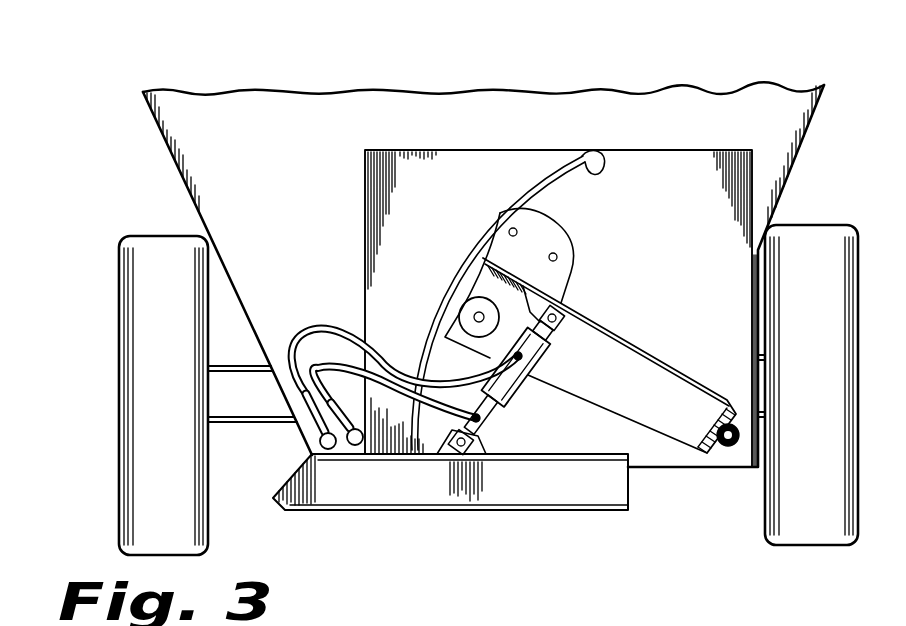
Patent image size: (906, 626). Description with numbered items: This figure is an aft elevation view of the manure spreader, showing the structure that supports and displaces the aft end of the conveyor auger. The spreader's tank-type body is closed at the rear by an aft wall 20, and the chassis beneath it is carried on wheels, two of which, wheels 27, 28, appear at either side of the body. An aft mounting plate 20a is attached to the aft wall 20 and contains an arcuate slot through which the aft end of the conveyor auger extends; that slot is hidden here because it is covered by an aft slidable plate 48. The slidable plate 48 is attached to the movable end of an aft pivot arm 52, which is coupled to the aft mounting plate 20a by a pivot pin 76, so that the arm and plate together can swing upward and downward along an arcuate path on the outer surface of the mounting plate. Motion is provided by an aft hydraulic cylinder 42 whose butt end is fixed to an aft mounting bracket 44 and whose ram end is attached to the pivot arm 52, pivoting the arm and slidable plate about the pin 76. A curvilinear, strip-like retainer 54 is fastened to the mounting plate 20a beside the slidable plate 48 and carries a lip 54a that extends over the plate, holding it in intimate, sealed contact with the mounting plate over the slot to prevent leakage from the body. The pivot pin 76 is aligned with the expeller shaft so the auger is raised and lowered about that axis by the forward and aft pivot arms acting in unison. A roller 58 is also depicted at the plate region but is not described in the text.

The aft wall 20 is at (275, 115).
The aft mounting plate 20a is at (487, 170).
The wheel 27 is at (138, 236).
The wheel 28 is at (822, 230).
The aft hydraulic cylinder 42 is at (507, 400).
The aft mounting bracket 44 is at (442, 440).
The aft slidable plate 48 is at (547, 233).
The aft pivot arm 52 is at (670, 417).
The retainer 54 is at (552, 160).
The lip 54a is at (630, 153).
The roller 58 is at (470, 308).
The pivot pin 76 is at (735, 470).